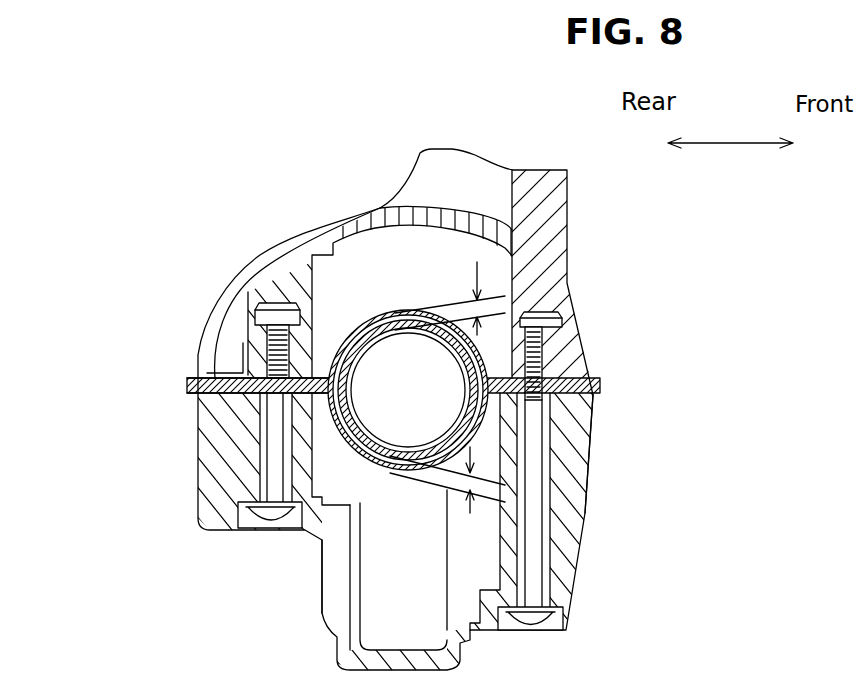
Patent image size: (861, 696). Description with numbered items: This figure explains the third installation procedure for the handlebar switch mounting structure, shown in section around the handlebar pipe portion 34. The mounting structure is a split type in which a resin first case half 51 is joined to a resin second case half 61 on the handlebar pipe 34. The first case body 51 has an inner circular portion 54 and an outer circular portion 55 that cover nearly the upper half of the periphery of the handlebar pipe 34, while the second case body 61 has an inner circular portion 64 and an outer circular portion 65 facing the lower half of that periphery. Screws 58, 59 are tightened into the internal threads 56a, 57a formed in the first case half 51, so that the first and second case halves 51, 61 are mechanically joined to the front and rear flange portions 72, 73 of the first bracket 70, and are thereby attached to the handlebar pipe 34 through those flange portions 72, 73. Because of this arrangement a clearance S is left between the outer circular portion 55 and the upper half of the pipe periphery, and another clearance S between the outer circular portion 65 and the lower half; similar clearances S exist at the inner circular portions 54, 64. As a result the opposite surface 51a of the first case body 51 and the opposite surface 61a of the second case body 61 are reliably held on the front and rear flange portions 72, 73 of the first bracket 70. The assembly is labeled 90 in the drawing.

The first case half 51 is at (592, 249).
The second case half 61 is at (594, 584).
The opposite surface 51a is at (200, 405).
The opposite surface 61a is at (200, 380).
The inner circular portion 54 is at (310, 296).
The outer circular portion 55 is at (290, 296).
The mount assembly 90 is at (310, 296).
The handlebar pipe portion 34 is at (357, 322).
The rear flange portion 73 is at (350, 447).
The internal thread 56a is at (258, 345).
The internal thread 57a is at (562, 340).
The screw 58 is at (262, 458).
The screw 59 is at (560, 534).
The first bracket 70 is at (316, 522).
The front flange portion 72 is at (587, 443).
The inner circular portion 64 is at (337, 555).
The outer circular portion 65 is at (388, 452).
The clearance S is at (569, 287).